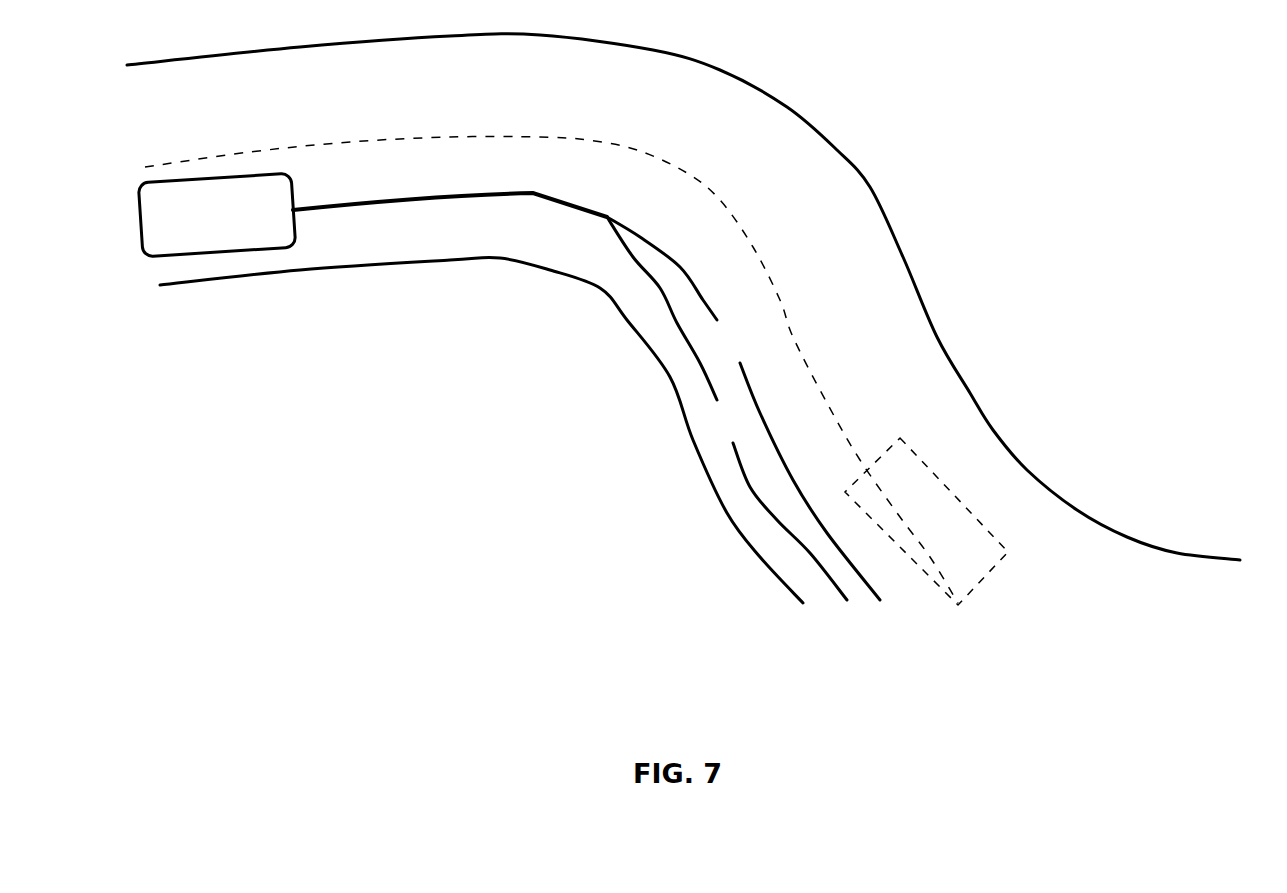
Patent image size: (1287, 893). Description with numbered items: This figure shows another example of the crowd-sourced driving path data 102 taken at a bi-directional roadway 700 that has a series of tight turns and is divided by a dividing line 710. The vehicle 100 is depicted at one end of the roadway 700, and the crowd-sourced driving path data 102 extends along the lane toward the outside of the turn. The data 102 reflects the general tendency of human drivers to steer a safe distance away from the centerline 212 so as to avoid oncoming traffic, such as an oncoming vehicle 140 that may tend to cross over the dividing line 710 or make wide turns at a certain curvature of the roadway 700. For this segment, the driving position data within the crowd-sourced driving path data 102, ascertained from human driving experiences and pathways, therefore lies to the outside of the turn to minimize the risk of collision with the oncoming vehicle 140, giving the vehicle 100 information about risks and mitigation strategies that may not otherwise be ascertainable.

The vehicle 100 is at (216, 215).
The crowd-sourced driving path data 102 is at (727, 408).
The centerline 212 is at (586, 396).
The dividing line 710 is at (551, 370).
The vehicle 140 is at (926, 521).
The bi-directional roadway 700 is at (992, 257).